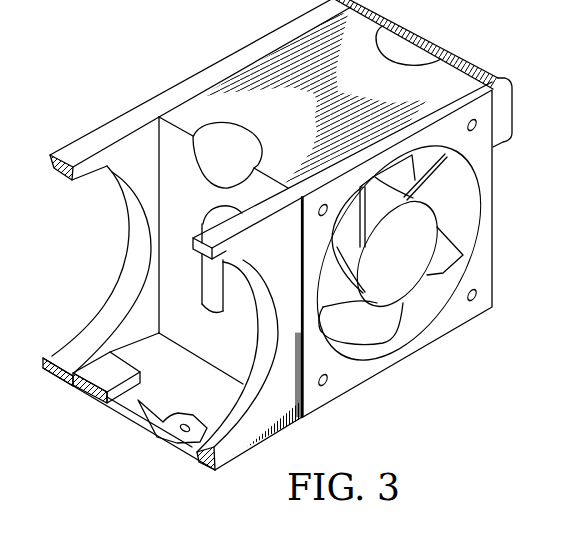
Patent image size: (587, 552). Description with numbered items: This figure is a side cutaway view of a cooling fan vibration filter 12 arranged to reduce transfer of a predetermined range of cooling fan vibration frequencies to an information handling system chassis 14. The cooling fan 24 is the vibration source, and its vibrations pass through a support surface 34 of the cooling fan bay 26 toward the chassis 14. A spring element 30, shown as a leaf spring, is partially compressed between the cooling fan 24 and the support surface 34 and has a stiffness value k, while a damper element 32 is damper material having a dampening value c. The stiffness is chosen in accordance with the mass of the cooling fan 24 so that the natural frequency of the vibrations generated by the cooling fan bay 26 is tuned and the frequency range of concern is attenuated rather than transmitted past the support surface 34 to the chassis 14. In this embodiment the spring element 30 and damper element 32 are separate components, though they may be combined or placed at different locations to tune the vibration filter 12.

The cooling fan vibration filter 12 is at (53, 416).
The information handling system chassis 14 is at (133, 331).
The cooling fan 24 is at (210, 291).
The cooling fan bay 26 is at (441, 369).
The spring element 30 is at (168, 435).
The damper element 32 is at (107, 370).
The support surface 34 is at (130, 421).